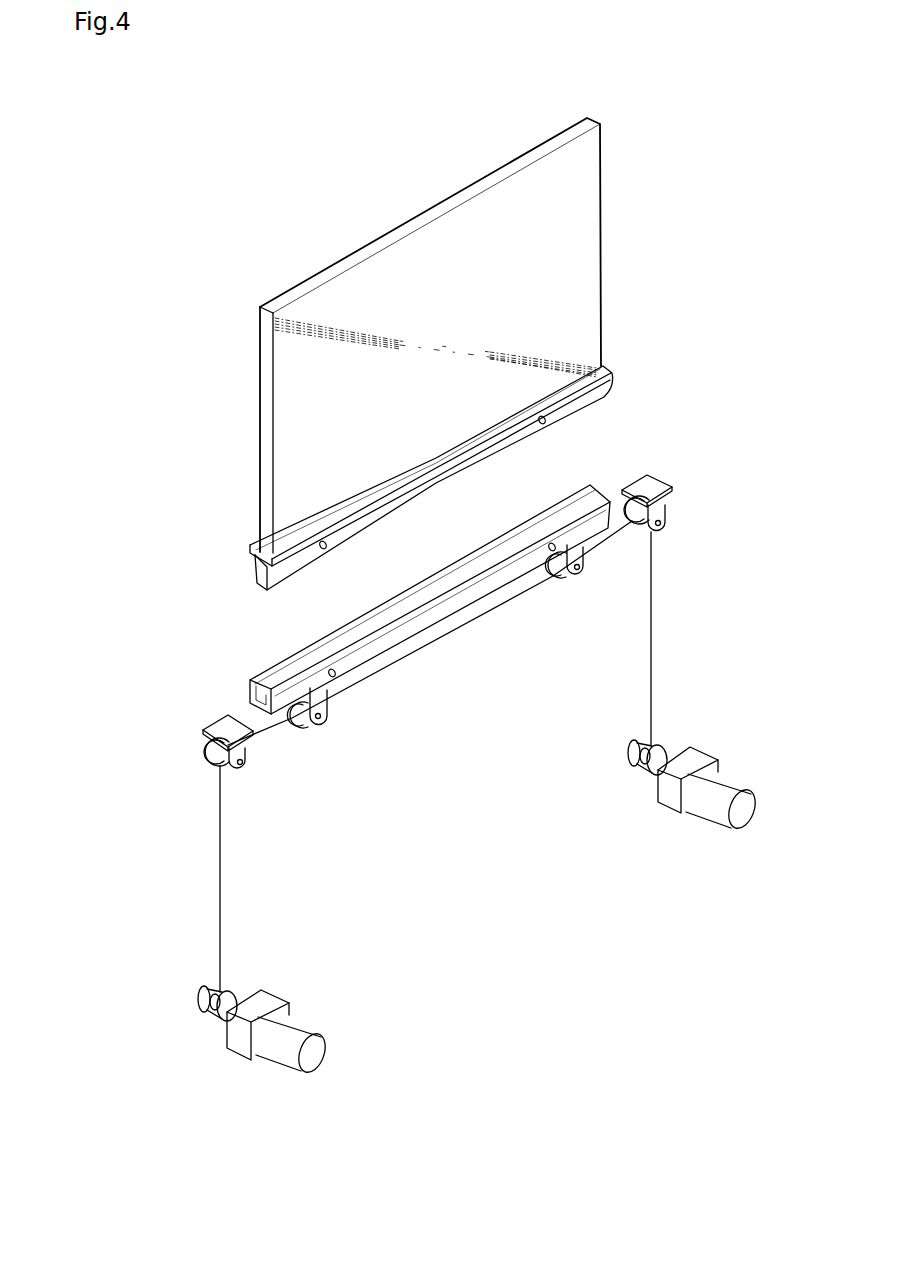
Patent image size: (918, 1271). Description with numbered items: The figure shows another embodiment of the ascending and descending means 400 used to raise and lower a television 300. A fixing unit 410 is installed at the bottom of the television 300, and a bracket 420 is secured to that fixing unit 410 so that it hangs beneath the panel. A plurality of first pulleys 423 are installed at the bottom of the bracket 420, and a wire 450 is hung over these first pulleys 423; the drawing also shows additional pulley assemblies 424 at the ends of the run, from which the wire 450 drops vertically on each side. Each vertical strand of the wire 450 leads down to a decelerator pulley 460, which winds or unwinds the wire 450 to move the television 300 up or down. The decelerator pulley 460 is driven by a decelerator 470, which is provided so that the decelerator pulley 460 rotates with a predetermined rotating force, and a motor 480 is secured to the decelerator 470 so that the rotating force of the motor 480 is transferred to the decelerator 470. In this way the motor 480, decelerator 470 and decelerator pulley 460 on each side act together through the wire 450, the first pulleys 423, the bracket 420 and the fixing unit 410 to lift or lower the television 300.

The television 300 is at (595, 255).
The ascending and descending means 400 is at (479, 748).
The fixing unit 410 is at (598, 391).
The bracket 420 is at (598, 497).
The first pulleys 423 is at (548, 567).
The end rollers 424 is at (668, 508).
The wire 450 is at (651, 638).
The decelerator pulley 460 is at (630, 767).
The decelerator 470 is at (662, 798).
The motor 480 is at (718, 808).